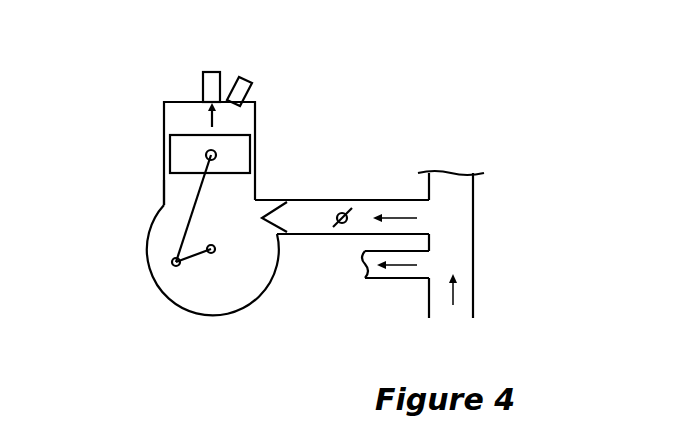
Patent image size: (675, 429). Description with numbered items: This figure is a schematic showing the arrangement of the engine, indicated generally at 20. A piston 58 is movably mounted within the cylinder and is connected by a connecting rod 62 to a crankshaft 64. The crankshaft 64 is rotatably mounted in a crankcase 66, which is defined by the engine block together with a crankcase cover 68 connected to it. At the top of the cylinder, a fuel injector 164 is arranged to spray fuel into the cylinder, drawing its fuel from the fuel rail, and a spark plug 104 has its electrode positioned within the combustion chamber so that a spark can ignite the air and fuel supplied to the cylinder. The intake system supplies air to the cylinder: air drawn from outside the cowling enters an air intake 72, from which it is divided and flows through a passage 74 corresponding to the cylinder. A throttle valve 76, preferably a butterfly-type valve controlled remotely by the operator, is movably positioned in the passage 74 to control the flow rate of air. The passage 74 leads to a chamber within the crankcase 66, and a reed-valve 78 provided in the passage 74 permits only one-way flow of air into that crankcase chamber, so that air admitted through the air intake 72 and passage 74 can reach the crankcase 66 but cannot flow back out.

The engine 20 is at (131, 91).
The piston 58 is at (178, 147).
The connecting rod 62 is at (195, 198).
The crankshaft 64 is at (207, 242).
The crankcase 66 is at (178, 285).
The crankcase cover 68 is at (150, 267).
The air intake 72 is at (475, 242).
The passage 74 is at (313, 235).
The throttle valve 76 is at (333, 230).
The reed-valve 78 is at (272, 210).
The spark plug 104 is at (253, 85).
The fuel injector 164 is at (203, 82).